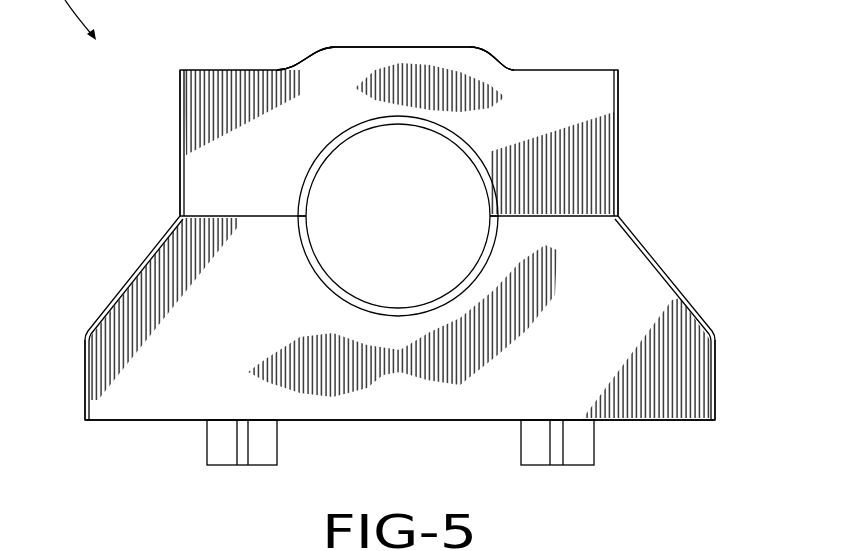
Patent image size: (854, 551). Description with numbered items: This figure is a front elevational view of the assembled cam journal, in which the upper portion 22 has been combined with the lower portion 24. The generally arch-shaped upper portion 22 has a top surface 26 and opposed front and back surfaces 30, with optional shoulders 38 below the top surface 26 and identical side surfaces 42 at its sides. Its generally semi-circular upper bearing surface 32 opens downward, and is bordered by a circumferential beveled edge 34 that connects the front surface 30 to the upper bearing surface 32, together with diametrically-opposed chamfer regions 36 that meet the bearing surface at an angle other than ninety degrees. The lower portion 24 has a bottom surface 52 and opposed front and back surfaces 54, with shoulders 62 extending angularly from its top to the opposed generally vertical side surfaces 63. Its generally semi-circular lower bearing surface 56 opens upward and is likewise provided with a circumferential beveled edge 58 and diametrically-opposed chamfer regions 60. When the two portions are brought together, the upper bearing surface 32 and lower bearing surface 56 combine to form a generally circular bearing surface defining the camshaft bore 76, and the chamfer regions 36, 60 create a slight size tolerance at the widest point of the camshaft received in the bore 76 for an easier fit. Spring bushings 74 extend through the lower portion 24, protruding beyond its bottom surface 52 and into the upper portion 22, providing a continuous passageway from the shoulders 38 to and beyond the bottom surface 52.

The upper portion 22 is at (195, 100).
The lower portion 24 is at (153, 263).
The top surface 26 is at (367, 47).
The front and back surfaces 30 is at (590, 103).
The upper bearing surface 32 is at (333, 157).
The circumferential beveled edge 34 is at (473, 157).
The chamfer regions 36 is at (303, 215).
The shoulders 38 is at (222, 68).
The side surfaces 42 is at (180, 197).
The bottom surface 52 is at (320, 420).
The front and back surfaces 54 is at (120, 387).
The lower bearing surface 56 is at (333, 278).
The circumferential beveled edge 58 is at (473, 268).
The chamfer regions 60 is at (303, 218).
The shoulders 62 is at (664, 267).
The side surfaces 63 is at (715, 392).
The spring bushings 74 is at (217, 437).
The camshaft bore 76 is at (377, 147).